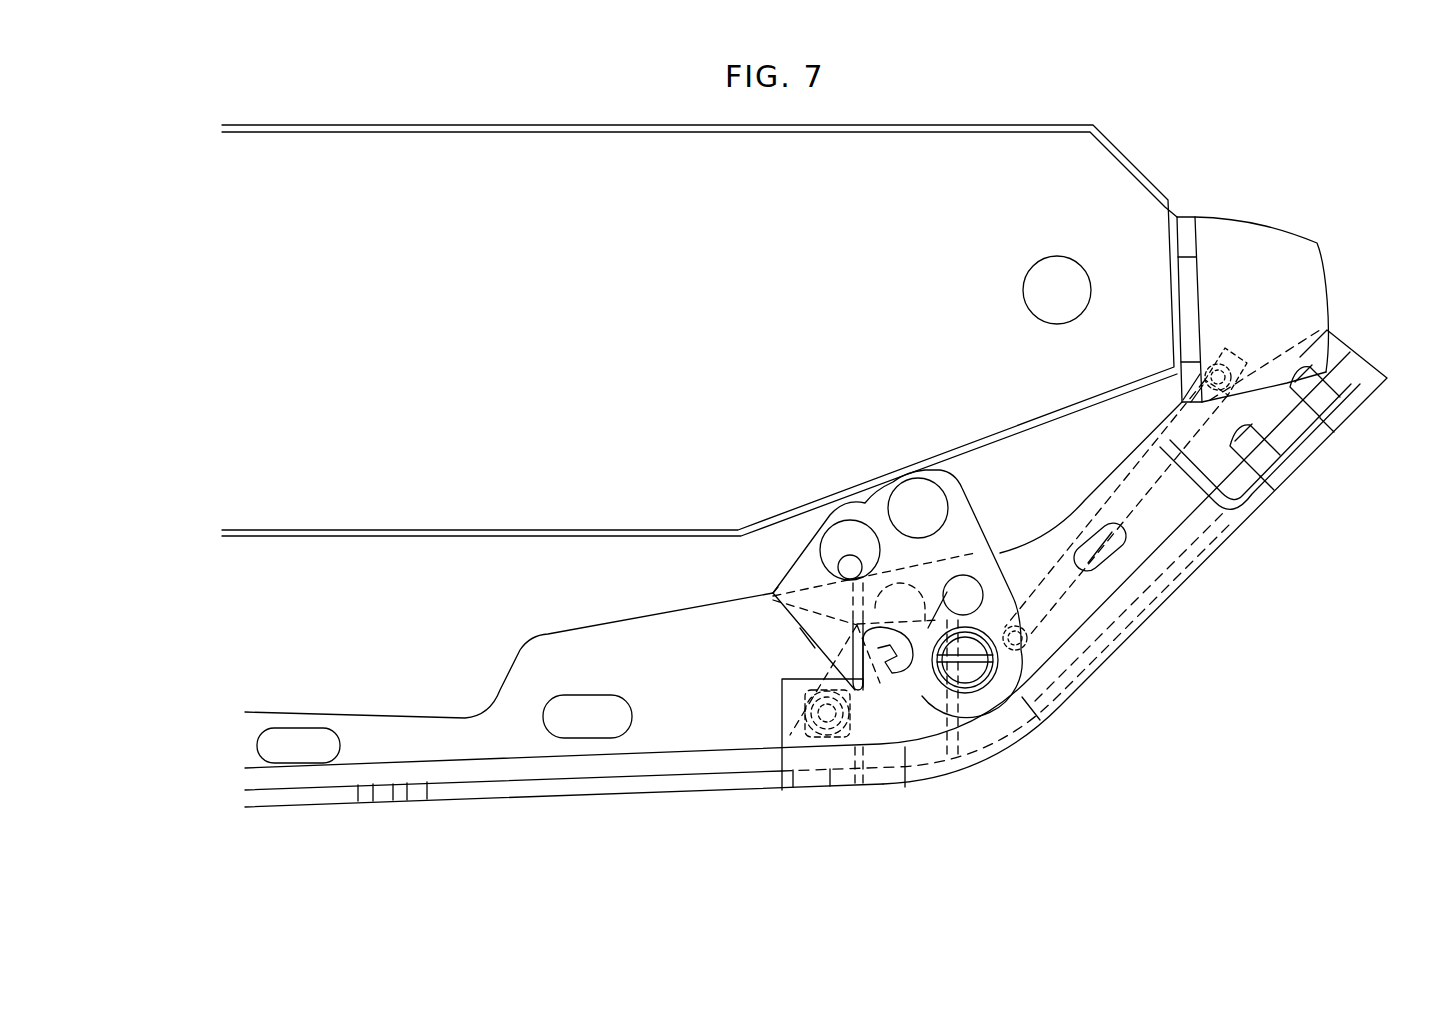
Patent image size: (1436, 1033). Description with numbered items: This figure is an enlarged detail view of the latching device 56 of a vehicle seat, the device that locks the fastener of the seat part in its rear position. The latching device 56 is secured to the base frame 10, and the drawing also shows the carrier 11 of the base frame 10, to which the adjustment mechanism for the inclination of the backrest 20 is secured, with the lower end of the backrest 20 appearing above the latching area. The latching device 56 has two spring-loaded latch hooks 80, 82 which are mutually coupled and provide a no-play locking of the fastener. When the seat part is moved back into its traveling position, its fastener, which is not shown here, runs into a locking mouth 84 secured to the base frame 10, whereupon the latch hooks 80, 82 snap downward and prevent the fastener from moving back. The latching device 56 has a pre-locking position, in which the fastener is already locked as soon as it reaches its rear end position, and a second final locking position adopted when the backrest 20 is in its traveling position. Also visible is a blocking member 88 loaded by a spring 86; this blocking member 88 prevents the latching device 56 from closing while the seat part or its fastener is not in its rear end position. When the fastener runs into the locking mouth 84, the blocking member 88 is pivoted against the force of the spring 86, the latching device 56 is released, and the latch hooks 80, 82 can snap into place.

The base frame 10 is at (598, 767).
The carrier 11 is at (1057, 633).
The backrest 20 is at (593, 152).
The latching device 56 is at (778, 576).
The latch hook 80 is at (790, 618).
The latch hook 82 is at (960, 532).
The locking mouth 84 is at (801, 650).
The spring 86 is at (853, 710).
The blocking member 88 is at (880, 665).